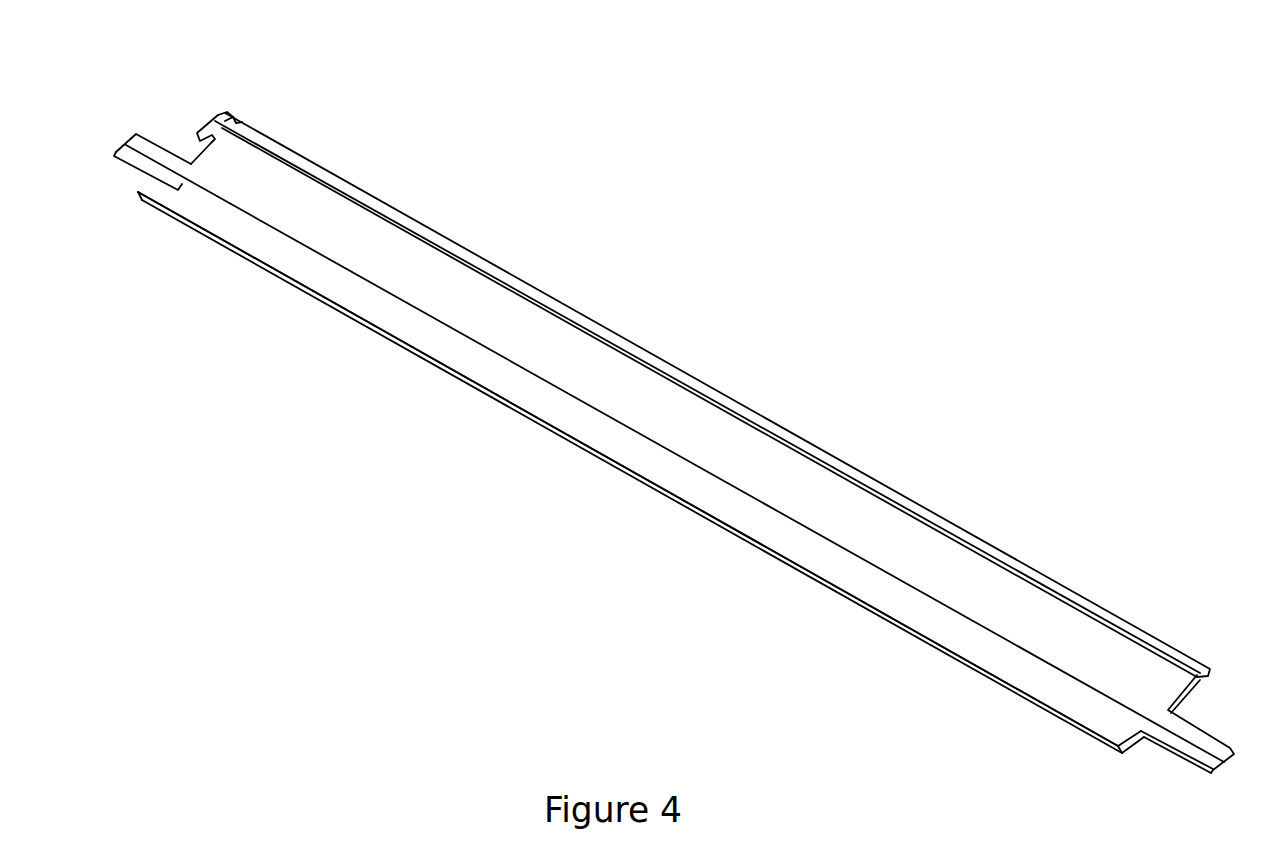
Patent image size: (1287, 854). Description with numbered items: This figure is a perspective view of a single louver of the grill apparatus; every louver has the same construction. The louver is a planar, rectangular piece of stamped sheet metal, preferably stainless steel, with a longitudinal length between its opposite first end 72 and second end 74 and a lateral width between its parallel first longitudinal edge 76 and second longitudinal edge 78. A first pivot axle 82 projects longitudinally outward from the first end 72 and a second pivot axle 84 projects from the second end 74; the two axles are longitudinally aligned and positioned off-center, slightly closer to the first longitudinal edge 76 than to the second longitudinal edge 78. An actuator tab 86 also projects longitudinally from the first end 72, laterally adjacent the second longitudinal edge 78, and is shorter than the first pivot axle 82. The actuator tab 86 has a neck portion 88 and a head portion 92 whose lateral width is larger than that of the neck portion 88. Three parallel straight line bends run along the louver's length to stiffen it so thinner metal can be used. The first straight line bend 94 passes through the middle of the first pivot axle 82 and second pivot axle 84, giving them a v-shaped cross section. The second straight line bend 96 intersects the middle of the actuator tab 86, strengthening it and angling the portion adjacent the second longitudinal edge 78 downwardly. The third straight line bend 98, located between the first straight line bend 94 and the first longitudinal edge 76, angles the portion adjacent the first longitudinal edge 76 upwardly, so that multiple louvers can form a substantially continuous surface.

The first end 72 is at (176, 188).
The second end 74 is at (1132, 740).
The first longitudinal edge 76 is at (595, 451).
The second longitudinal edge 78 is at (641, 347).
The first pivot axle 82 is at (134, 135).
The second pivot axle 84 is at (1212, 746).
The actuator tab 86 is at (219, 116).
The neck portion 88 is at (236, 123).
The head portion 92 is at (222, 116).
The first straight line bend 94 is at (755, 498).
The second straight line bend 96 is at (815, 462).
The third straight line bend 98 is at (1118, 749).